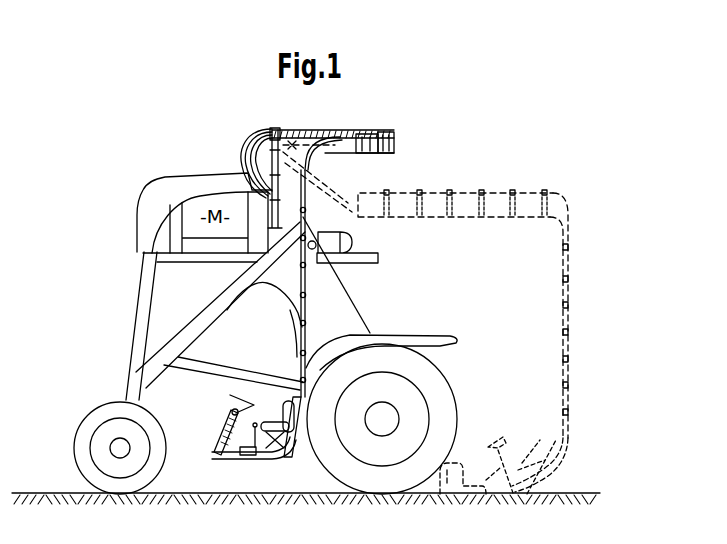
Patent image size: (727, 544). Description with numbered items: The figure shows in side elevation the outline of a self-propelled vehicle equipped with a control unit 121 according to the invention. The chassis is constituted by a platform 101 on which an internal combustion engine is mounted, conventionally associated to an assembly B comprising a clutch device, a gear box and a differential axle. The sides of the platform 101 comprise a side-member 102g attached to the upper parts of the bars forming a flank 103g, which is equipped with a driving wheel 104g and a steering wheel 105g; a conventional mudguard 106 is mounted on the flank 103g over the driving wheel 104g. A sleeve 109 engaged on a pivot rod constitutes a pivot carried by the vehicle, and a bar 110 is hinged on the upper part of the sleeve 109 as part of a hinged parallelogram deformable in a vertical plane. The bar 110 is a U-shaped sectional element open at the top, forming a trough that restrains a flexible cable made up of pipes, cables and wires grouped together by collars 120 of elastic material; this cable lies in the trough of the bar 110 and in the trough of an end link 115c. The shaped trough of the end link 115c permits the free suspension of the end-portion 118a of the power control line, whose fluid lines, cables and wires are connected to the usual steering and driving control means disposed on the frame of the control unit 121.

The platform 101 is at (205, 268).
The side-member 102g is at (182, 261).
The flank 103g is at (186, 323).
The driving wheel 104g is at (441, 397).
The steering wheel 105g is at (88, 422).
The mudguard 106 is at (433, 335).
The sleeve 109 is at (262, 163).
The bar 110 is at (306, 134).
The end link 115c is at (396, 146).
The end-portion of power control line 118a is at (306, 307).
The collars 120 is at (300, 352).
The control unit 121 is at (219, 426).
The assembly B is at (346, 240).